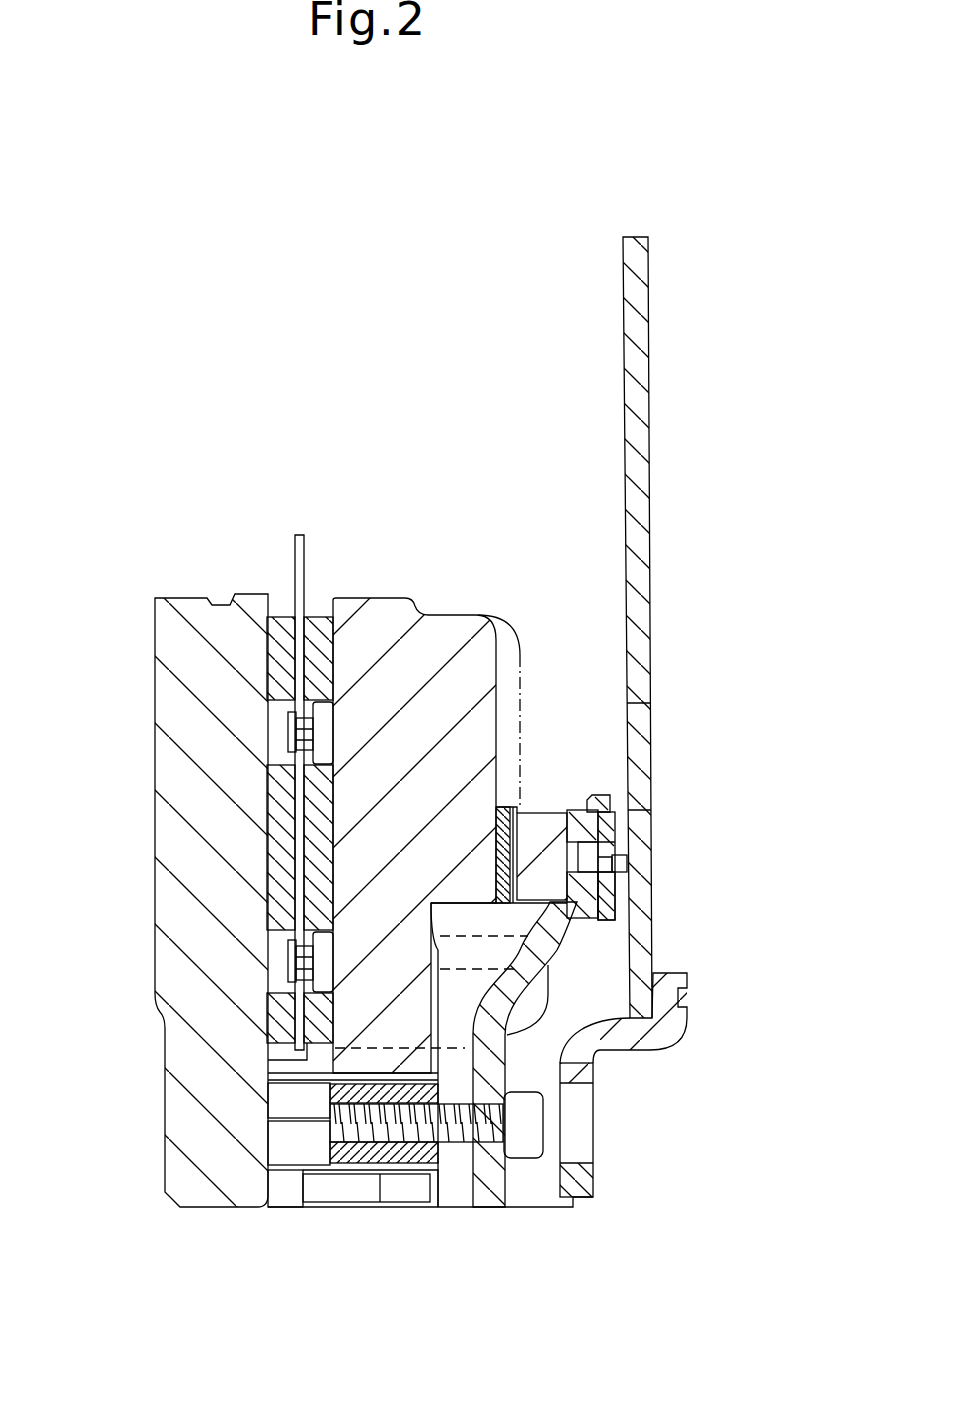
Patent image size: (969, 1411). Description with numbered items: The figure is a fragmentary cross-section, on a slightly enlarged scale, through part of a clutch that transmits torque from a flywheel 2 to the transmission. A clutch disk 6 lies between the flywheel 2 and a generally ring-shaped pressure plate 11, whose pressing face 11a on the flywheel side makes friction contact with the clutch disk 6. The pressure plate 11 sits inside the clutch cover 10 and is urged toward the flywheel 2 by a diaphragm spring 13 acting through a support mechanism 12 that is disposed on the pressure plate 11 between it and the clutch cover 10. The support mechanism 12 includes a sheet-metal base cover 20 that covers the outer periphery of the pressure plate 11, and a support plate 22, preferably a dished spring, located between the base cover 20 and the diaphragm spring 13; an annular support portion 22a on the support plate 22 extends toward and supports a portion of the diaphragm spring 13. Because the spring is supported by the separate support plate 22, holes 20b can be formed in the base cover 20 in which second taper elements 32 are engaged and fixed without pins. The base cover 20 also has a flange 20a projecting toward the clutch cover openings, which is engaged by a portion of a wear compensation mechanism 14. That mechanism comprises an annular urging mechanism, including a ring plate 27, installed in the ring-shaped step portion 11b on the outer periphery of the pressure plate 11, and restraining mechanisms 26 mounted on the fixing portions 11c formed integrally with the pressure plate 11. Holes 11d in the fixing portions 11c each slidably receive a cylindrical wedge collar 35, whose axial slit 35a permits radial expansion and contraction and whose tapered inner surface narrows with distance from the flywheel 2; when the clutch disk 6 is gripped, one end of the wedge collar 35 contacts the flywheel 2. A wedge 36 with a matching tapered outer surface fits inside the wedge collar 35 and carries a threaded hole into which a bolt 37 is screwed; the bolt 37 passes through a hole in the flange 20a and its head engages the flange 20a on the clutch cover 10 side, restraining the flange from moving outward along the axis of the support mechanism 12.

The flywheel 2 is at (175, 641).
The clutch disk 6 is at (320, 633).
The clutch cover 10 is at (680, 978).
The pressure plate 11 is at (437, 627).
The pressing face 11a is at (290, 627).
The step portion 11b is at (540, 812).
The fixing portion 11c is at (346, 1200).
The hole 11d is at (392, 1200).
The support mechanism 12 is at (608, 773).
The diaphragm spring 13 is at (645, 496).
The wear compensation mechanism 14 is at (563, 1010).
The base cover 20 is at (603, 803).
The flange 20a is at (490, 1200).
The hole 20b is at (590, 855).
The support plate 22 is at (608, 908).
The support portion 22a is at (623, 868).
The restraining mechanism 26 is at (283, 1195).
The ring plate 27 is at (497, 850).
The second taper element 32 is at (553, 832).
The wedge collar 35 is at (268, 1092).
The slit 35a is at (268, 1145).
The wedge 36 is at (323, 1190).
The bolt 37 is at (527, 1155).